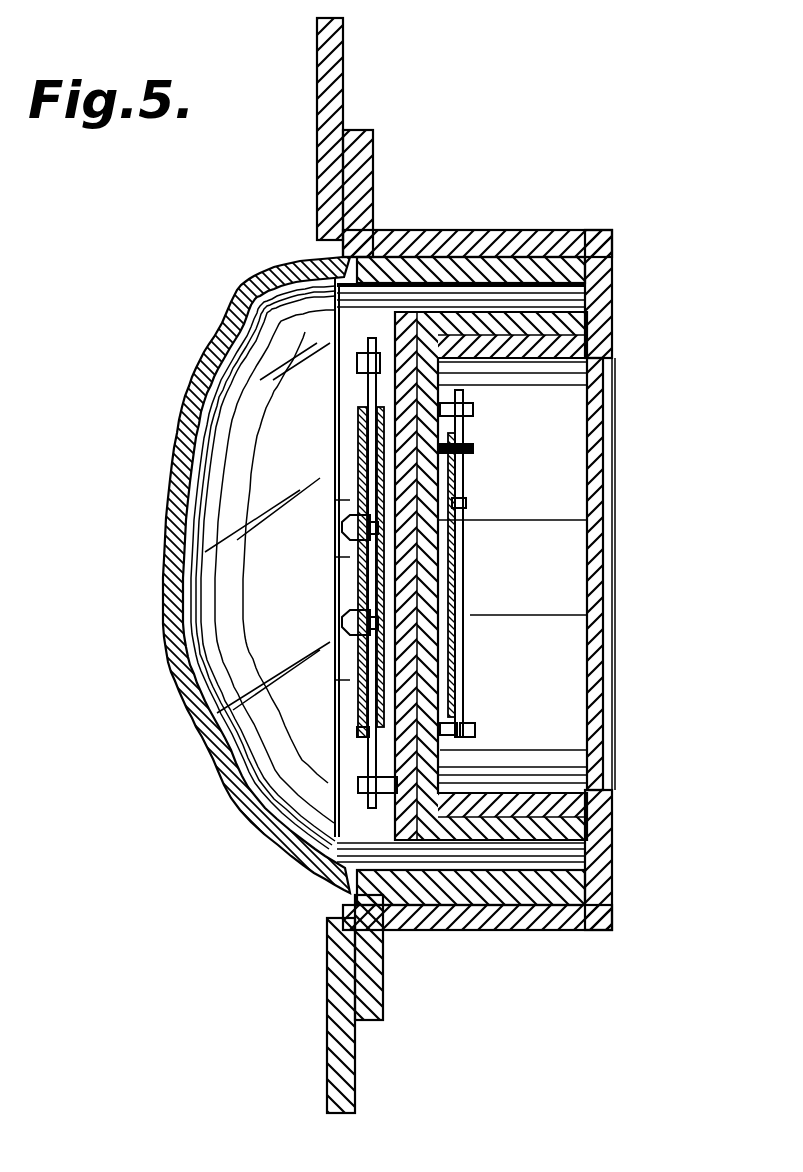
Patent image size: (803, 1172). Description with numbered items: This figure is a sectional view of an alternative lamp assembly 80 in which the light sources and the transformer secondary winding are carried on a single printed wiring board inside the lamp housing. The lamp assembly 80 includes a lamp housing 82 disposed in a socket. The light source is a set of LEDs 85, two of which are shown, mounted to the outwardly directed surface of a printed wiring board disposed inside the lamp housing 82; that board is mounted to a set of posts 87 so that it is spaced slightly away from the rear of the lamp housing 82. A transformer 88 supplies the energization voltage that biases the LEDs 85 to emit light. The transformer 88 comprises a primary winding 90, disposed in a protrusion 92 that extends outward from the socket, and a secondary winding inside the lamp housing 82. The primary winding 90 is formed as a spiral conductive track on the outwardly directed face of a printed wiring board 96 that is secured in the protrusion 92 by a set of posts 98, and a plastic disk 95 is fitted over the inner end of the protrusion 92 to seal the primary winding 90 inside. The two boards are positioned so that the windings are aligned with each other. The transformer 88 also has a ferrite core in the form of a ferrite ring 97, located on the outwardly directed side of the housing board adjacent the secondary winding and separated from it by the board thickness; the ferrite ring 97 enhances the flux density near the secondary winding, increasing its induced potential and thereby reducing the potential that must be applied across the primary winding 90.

The lamp assembly 80 is at (155, 344).
The lamp housing 82 is at (290, 903).
The LEDs 85 is at (355, 527).
The posts 87 is at (362, 787).
The transformer 88 is at (382, 398).
The primary winding 90 is at (365, 447).
The protrusion 92 is at (522, 350).
The plastic disk 95 is at (593, 630).
The printed wiring board 96 is at (460, 503).
The ferrite ring 97 is at (360, 735).
The posts 98 is at (473, 410).